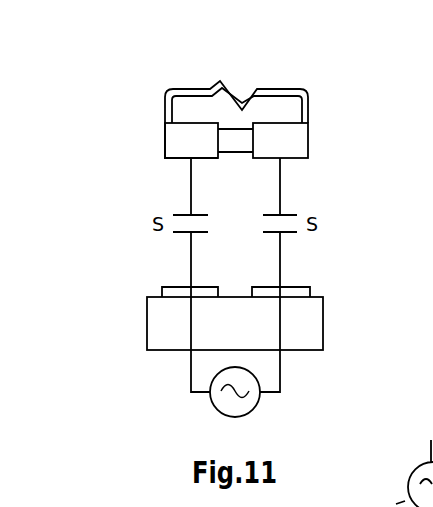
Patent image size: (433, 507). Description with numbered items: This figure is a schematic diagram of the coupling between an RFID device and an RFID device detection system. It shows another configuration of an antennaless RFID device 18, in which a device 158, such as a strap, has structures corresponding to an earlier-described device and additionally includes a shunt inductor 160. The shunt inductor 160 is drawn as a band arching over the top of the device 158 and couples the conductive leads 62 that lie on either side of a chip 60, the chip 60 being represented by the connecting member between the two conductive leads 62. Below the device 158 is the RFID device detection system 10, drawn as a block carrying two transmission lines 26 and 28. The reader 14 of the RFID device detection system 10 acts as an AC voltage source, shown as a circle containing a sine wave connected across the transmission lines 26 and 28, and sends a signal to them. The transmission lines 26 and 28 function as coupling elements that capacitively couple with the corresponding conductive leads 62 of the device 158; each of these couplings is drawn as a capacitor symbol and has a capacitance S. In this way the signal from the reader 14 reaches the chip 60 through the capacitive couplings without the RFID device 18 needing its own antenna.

The RFID device detection system 10 is at (122, 326).
The reader 14 is at (198, 416).
The antennaless RFID device 18 is at (130, 87).
The transmission line 26 is at (175, 290).
The transmission line 28 is at (295, 290).
The chip 60 is at (233, 137).
The conductive leads 62 is at (172, 142).
The device 158 is at (140, 131).
The shunt inductor 160 is at (285, 90).